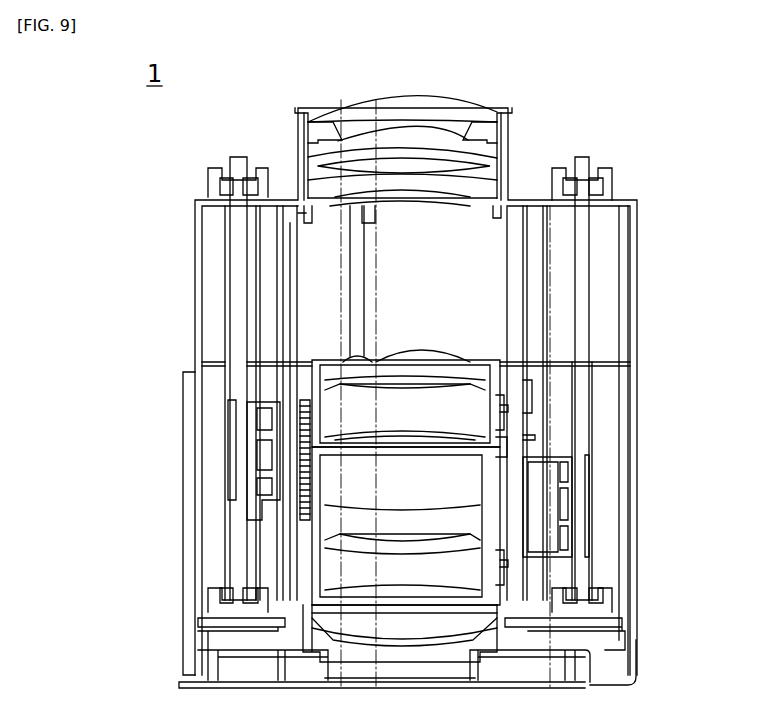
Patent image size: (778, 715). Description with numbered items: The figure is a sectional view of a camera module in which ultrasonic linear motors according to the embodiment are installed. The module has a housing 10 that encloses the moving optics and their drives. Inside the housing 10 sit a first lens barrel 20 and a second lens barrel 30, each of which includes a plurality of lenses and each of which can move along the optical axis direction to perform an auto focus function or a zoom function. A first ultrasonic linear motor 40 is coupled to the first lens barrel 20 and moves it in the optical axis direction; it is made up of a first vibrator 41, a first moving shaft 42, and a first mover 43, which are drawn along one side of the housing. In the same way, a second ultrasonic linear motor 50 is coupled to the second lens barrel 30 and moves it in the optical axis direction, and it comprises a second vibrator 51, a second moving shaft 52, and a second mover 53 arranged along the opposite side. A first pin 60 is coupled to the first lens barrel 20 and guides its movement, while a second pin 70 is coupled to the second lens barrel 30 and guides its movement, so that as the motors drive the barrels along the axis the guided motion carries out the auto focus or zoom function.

The housing 10 is at (624, 215).
The first lens barrel 20 is at (318, 383).
The second lens barrel 30 is at (326, 540).
The first ultrasonic linear motor 40 is at (85, 310).
The first vibrator 41 is at (240, 330).
The first moving shaft 42 is at (236, 614).
The first mover 43 is at (240, 443).
The second ultrasonic linear motor 50 is at (689, 318).
The second vibrator 51 is at (582, 340).
The second moving shaft 52 is at (600, 620).
The second mover 53 is at (588, 482).
The first pin 60 is at (285, 263).
The second pin 70 is at (518, 276).